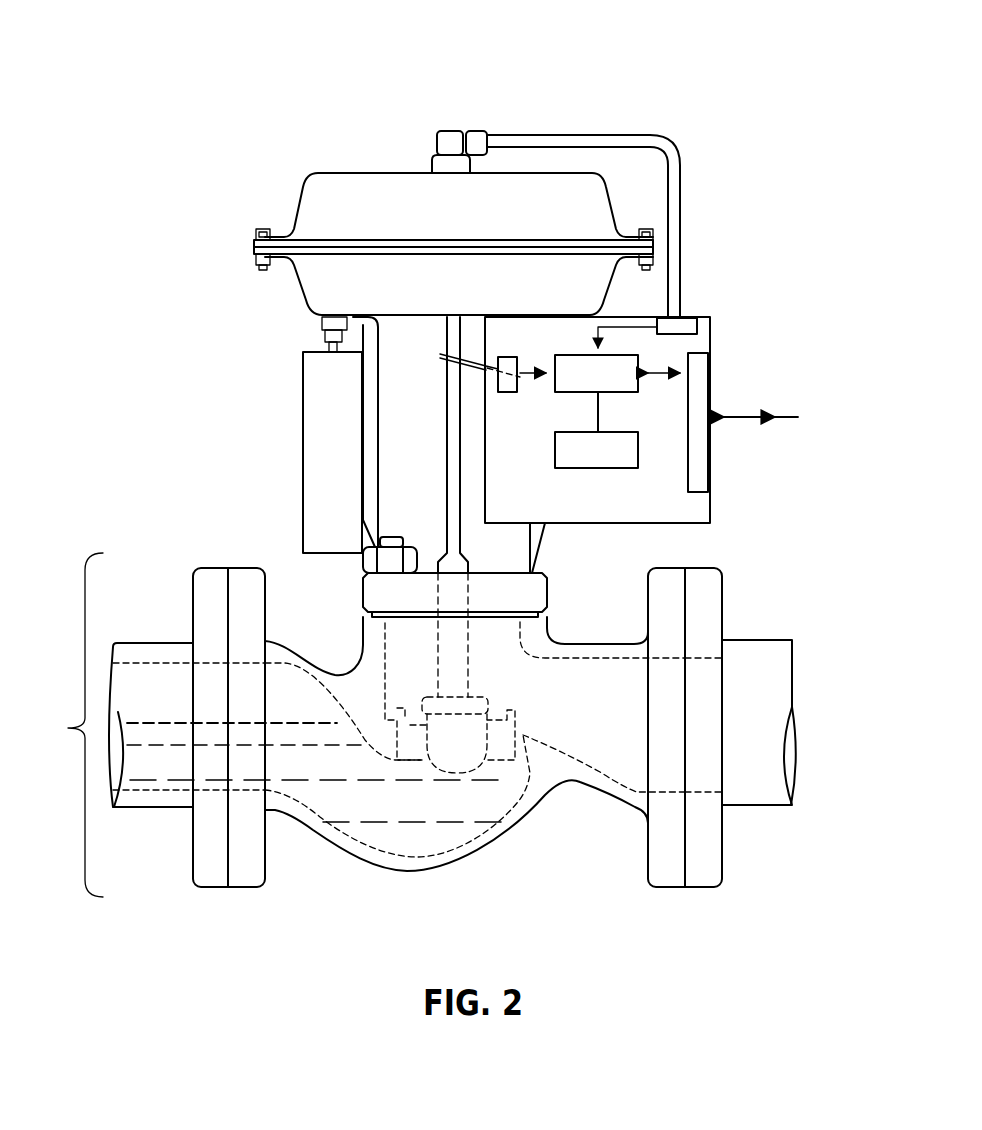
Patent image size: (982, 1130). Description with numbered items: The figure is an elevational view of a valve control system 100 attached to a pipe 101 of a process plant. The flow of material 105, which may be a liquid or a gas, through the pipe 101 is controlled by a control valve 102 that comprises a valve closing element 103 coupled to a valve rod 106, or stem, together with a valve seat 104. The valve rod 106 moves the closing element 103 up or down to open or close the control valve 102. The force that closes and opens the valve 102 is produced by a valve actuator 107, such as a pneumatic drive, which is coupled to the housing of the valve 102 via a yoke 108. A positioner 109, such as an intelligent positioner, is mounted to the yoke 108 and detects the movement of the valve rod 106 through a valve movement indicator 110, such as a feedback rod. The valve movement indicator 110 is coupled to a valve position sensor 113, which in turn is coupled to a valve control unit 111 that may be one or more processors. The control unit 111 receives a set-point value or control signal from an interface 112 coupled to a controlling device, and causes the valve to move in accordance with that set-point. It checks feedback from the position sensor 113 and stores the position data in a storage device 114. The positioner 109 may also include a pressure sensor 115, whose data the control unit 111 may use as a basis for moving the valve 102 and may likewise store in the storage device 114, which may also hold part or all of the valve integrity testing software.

The valve control system 100 is at (407, 72).
The pipe 101 is at (147, 808).
The control valve 102 is at (412, 736).
The valve closing element 103 is at (455, 755).
The valve seat 104 is at (505, 742).
The material 105 is at (402, 823).
The valve rod 106 is at (447, 503).
The valve actuator 107 is at (310, 172).
The yoke 108 is at (363, 425).
The positioner 109 is at (694, 510).
The valve movement indicator 110 is at (438, 356).
The valve control unit 111 is at (622, 393).
The interface 112 is at (701, 385).
The valve position sensor 113 is at (507, 393).
The storage device 114 is at (622, 469).
The pressure sensor 115 is at (697, 326).